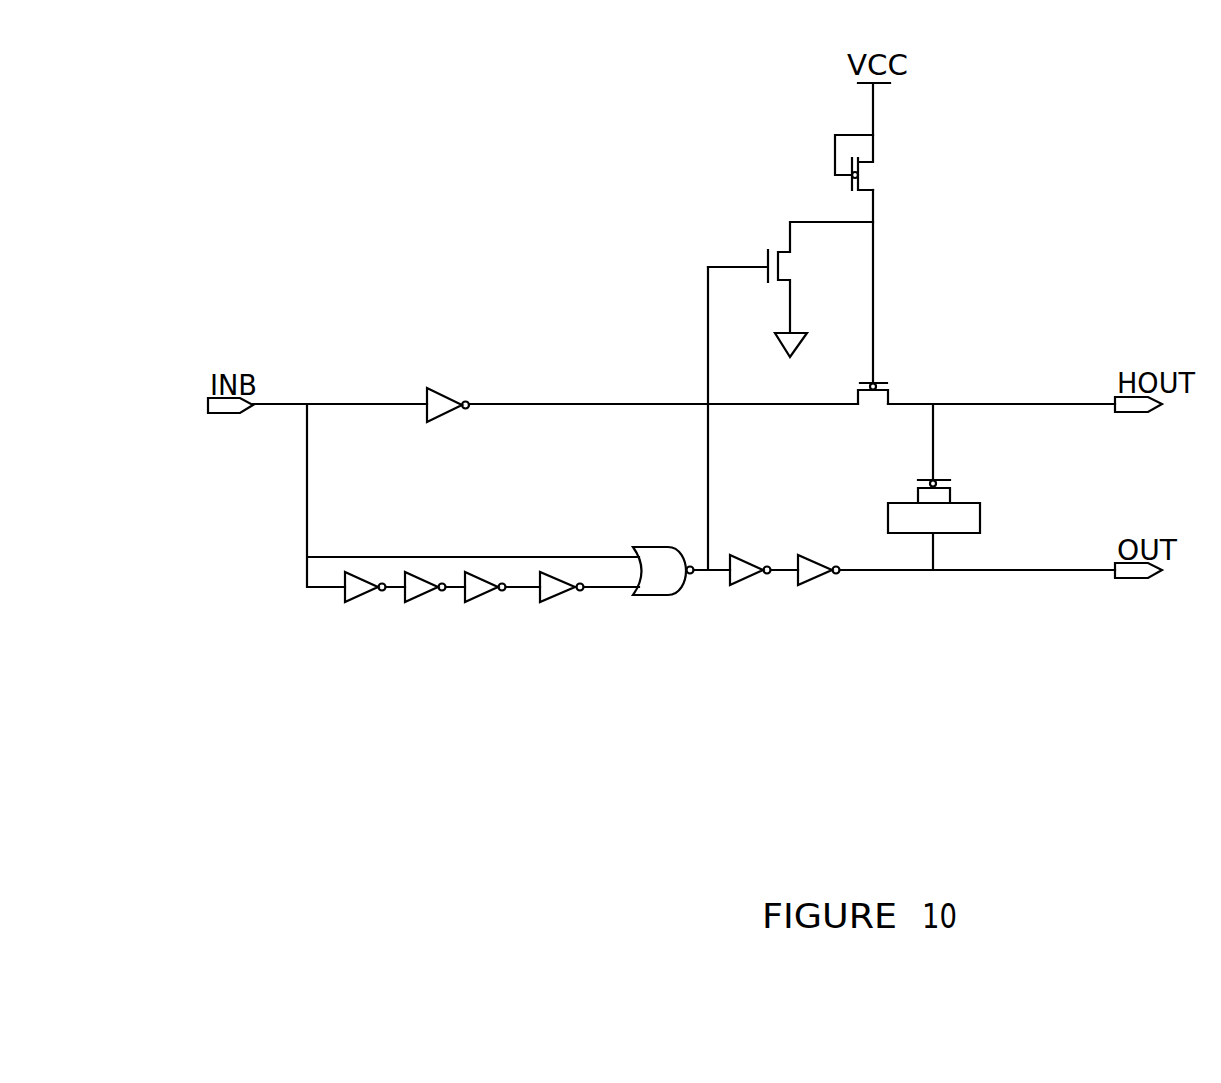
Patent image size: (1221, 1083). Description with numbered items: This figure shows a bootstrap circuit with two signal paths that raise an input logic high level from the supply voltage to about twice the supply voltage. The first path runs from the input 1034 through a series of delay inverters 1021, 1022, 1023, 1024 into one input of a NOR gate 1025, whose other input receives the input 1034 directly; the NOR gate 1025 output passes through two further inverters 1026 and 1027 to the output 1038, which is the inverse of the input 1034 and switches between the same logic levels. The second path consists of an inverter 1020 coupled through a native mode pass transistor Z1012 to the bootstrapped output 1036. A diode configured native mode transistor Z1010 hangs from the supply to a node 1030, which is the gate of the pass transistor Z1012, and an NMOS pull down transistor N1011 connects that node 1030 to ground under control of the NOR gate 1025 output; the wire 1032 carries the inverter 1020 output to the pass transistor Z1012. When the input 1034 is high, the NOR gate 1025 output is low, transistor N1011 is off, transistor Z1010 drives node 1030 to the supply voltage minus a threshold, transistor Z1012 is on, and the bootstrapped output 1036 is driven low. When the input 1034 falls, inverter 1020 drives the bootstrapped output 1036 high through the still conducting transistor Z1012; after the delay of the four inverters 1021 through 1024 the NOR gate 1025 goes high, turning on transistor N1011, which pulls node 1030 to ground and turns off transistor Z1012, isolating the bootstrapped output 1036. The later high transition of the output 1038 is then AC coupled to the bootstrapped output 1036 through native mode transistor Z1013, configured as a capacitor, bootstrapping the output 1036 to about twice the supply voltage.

The inverter 1020 is at (435, 416).
The inverter 1021 is at (353, 598).
The inverter 1022 is at (413, 598).
The inverter 1023 is at (473, 598).
The inverter 1024 is at (548, 598).
The NOR gate 1025 is at (643, 595).
The inverter 1026 is at (738, 582).
The inverter 1027 is at (806, 582).
The node 1030 is at (875, 263).
The node at output of inverter 1020 1032 is at (633, 390).
The INB input 1034 is at (373, 403).
The HOUT output 1036 is at (975, 402).
The OUT output 1038 is at (997, 570).
The diode configured native mode transistor Z1010 is at (863, 195).
The NMOS pull down transistor N1011 is at (780, 245).
The native mode pass transistor Z1012 is at (888, 395).
The native mode transistor configured as a coupling capacitor Z1013 is at (952, 493).